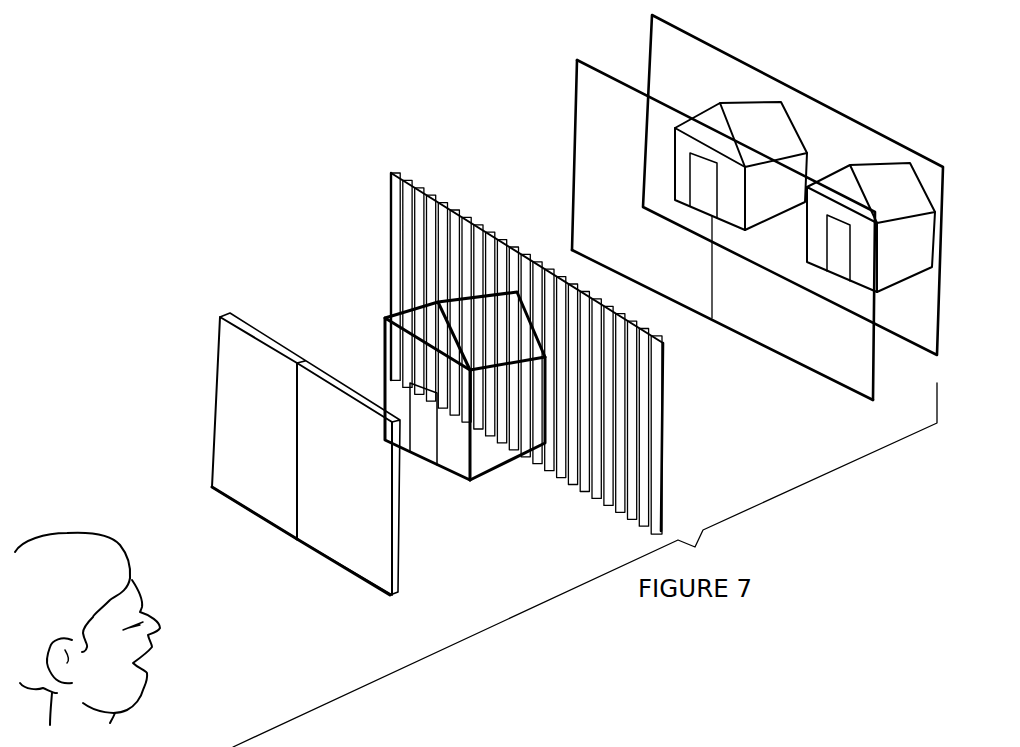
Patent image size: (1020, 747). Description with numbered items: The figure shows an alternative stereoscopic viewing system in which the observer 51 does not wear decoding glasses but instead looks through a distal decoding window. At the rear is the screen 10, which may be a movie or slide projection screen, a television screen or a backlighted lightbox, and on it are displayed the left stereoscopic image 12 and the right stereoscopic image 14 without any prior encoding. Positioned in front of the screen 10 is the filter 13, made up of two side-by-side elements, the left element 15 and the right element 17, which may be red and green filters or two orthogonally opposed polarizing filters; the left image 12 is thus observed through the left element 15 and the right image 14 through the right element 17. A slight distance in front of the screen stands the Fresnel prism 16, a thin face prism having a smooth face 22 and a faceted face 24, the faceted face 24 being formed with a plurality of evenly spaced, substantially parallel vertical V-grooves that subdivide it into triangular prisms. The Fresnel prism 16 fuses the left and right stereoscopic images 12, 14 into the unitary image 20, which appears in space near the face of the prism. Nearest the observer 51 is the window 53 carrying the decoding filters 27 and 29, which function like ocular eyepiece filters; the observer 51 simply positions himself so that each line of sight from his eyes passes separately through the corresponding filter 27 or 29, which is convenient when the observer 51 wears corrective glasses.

The screen 10 is at (748, 53).
The left stereoscopic image 12 is at (772, 122).
The right stereoscopic image 14 is at (900, 173).
The filter 13 is at (577, 112).
The left element 15 is at (587, 173).
The right element 17 is at (803, 342).
The Fresnel prism 16 is at (516, 362).
The smooth face 22 is at (663, 415).
The faceted face 24 is at (608, 487).
The unitary image 20 is at (457, 453).
The decoding filter 27 is at (252, 493).
The decoding filter 29 is at (353, 552).
The window 53 is at (400, 558).
The observer 51 is at (143, 673).